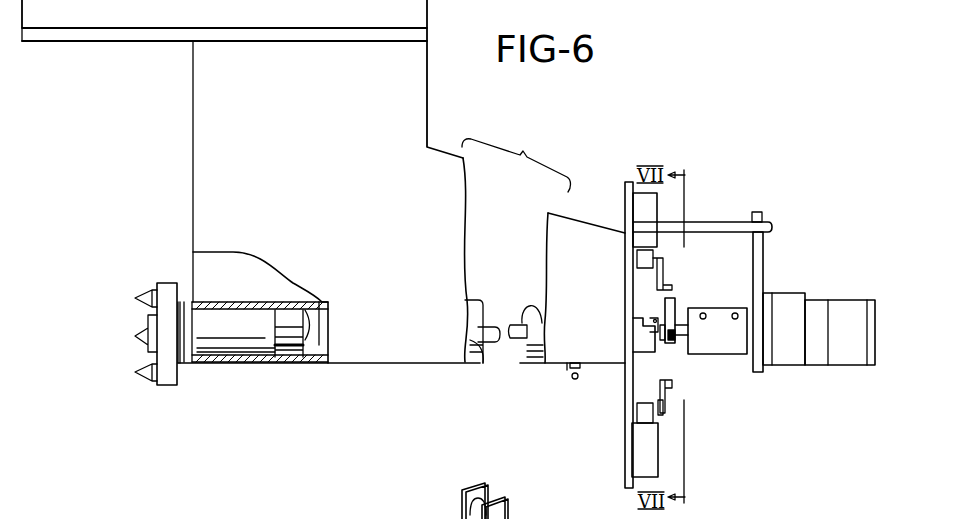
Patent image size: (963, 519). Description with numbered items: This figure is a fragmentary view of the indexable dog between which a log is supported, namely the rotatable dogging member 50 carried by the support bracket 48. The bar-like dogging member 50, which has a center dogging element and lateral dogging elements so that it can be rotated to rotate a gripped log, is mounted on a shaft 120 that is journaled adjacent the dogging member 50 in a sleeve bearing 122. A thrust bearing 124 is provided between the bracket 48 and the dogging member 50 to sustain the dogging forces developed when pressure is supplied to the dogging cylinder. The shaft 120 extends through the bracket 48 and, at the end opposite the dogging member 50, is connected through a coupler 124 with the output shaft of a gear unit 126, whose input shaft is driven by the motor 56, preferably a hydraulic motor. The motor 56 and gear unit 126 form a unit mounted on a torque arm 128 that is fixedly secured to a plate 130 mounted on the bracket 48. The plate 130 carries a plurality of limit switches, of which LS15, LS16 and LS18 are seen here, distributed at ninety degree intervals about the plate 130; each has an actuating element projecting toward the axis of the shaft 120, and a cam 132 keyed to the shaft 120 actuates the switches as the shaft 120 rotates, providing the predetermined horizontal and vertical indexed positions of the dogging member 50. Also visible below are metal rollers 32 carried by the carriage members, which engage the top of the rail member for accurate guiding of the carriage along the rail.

The support bracket 48 is at (407, 120).
The sleeve bearing 122 is at (251, 313).
The shaft 120 is at (295, 335).
The dogging member 50 is at (163, 386).
The thrust bearing and coupler 124 is at (188, 300).
The plate 130 is at (625, 195).
The limit switch LS15 is at (640, 207).
The torque arm 128 is at (763, 261).
The gear unit 126 is at (787, 302).
The motor 56 is at (852, 307).
The cam 132 is at (677, 305).
The limit switch LS18 is at (640, 340).
The limit switch LS16 is at (640, 443).
The rollers 32 is at (462, 513).